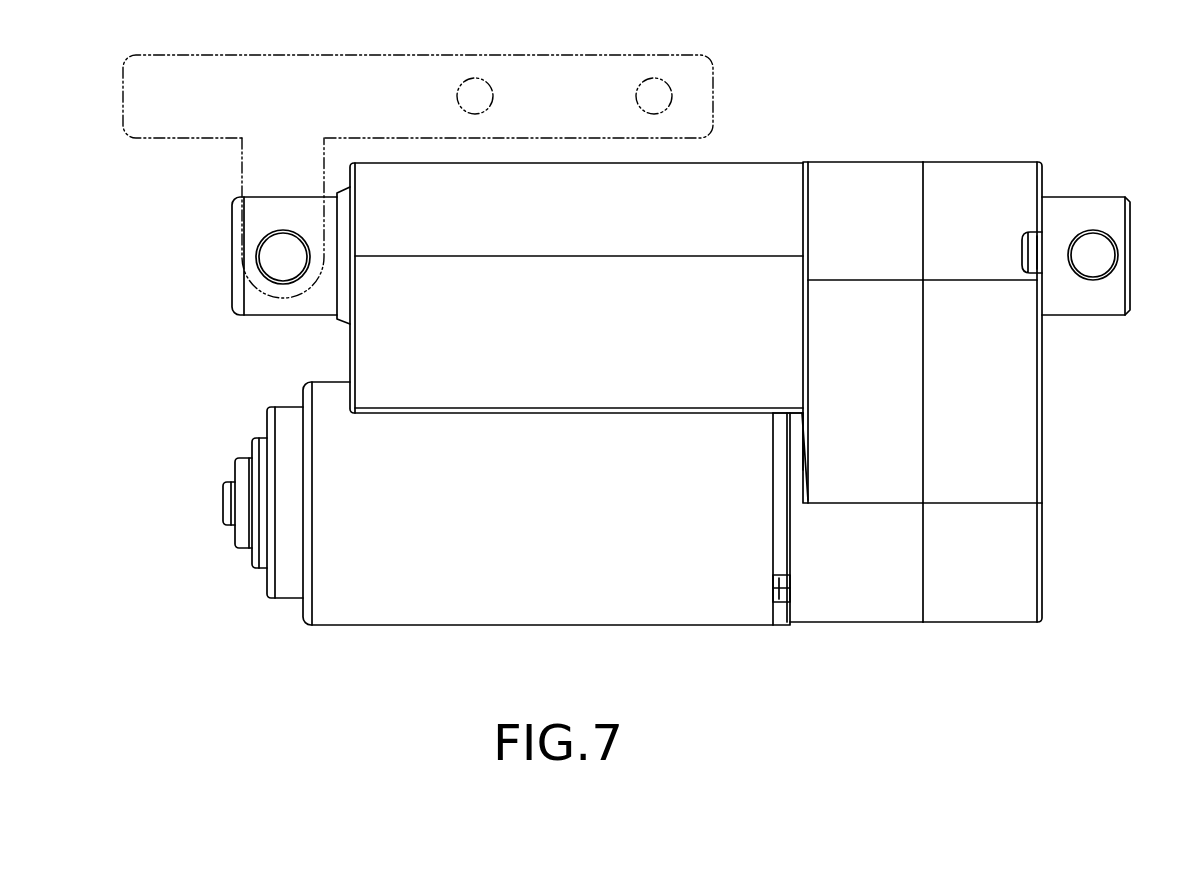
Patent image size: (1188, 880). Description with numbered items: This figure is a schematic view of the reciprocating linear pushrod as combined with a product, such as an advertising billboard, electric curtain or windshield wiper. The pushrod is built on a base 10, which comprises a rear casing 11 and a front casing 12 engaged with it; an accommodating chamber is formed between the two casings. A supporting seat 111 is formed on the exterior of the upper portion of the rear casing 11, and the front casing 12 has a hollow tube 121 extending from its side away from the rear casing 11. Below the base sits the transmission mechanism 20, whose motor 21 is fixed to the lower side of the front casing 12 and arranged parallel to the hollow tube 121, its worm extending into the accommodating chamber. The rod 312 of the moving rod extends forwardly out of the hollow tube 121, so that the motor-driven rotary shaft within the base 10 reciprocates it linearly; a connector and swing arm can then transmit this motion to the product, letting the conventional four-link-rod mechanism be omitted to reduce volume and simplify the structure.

The base 10 is at (916, 326).
The rear casing 11 is at (978, 178).
The front casing 12 is at (878, 178).
The supporting seat 111 is at (1090, 208).
The hollow tube 121 is at (588, 178).
The rod 312 is at (278, 306).
The transmission mechanism 20 is at (513, 545).
The motor 21 is at (515, 612).